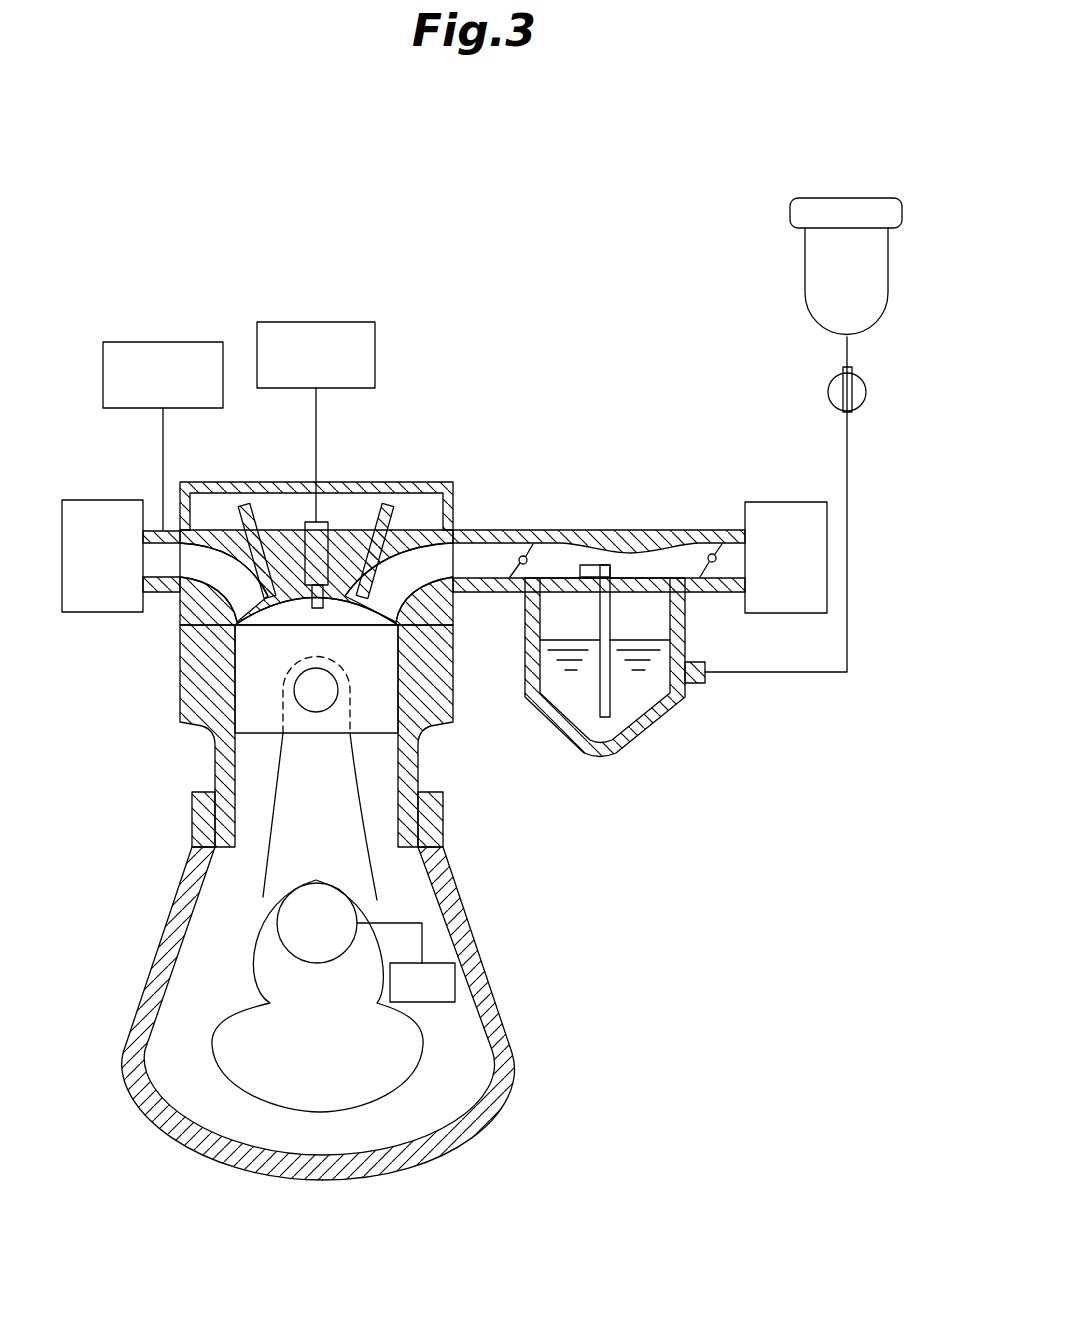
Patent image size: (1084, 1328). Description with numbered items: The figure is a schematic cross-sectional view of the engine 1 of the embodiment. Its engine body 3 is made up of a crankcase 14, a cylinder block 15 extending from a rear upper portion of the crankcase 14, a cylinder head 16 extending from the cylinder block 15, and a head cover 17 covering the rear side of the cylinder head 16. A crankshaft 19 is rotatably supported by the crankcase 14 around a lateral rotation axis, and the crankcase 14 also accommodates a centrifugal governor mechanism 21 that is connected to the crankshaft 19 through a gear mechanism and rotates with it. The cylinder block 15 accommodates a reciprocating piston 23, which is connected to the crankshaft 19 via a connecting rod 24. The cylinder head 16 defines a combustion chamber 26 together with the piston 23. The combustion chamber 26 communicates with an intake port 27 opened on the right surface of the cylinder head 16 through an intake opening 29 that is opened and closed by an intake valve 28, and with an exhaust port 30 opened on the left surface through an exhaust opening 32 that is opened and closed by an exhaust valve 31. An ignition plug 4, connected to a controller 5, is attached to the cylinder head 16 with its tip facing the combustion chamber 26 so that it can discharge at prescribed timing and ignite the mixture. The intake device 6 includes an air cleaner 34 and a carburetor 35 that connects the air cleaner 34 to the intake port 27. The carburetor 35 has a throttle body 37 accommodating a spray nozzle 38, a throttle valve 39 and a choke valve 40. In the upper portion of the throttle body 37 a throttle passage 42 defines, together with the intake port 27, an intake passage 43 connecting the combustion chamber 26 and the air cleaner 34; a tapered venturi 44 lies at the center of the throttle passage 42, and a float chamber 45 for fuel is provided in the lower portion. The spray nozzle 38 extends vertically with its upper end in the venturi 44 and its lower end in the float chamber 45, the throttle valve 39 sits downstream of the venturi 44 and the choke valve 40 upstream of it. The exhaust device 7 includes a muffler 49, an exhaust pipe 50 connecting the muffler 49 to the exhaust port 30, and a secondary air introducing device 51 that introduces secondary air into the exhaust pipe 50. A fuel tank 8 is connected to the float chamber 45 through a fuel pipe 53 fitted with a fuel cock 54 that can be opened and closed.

The engine 1 is at (124, 240).
The engine body 3 is at (120, 1001).
The ignition plug 4 is at (308, 528).
The controller 5 is at (350, 322).
The intake device 6 is at (615, 644).
The exhaust device 7 is at (78, 486).
The fuel tank 8 is at (874, 170).
The crankcase 14 is at (163, 960).
The cylinder block 15 is at (180, 655).
The cylinder head 16 is at (158, 608).
The head cover 17 is at (445, 482).
The crankshaft 19 is at (262, 900).
The governor mechanism 21 is at (455, 985).
The piston 23 is at (400, 698).
The connecting rod 24 is at (370, 880).
The combustion chamber 26 is at (287, 624).
The intake port 27 is at (465, 545).
The intake valve 28 is at (386, 512).
The intake opening 29 is at (425, 616).
The exhaust port 30 is at (244, 520).
The exhaust valve 31 is at (262, 556).
The exhaust opening 32 is at (296, 588).
The air cleaner 34 is at (783, 502).
The carburetor 35 is at (548, 748).
The throttle body 37 is at (638, 750).
The spray nozzle 38 is at (598, 692).
The throttle valve 39 is at (518, 594).
The choke valve 40 is at (722, 548).
The throttle passage 42 is at (512, 554).
The intake passage 43 is at (546, 447).
The venturi 44 is at (628, 558).
The float chamber 45 is at (560, 603).
The muffler 49 is at (100, 500).
The exhaust pipe 50 is at (150, 530).
The secondary air introducing device 51 is at (193, 342).
The fuel pipe 53 is at (795, 672).
The fuel cock 54 is at (868, 410).